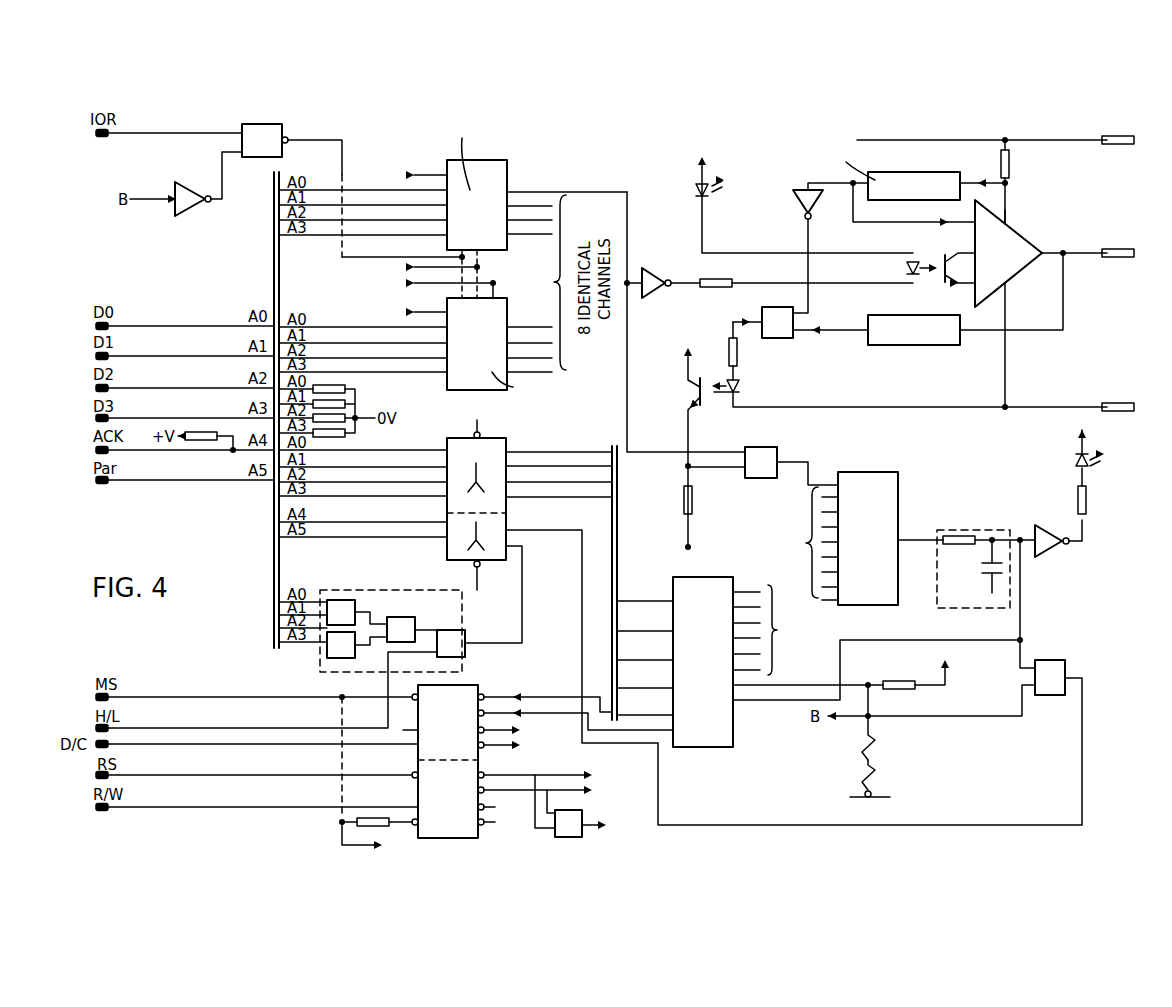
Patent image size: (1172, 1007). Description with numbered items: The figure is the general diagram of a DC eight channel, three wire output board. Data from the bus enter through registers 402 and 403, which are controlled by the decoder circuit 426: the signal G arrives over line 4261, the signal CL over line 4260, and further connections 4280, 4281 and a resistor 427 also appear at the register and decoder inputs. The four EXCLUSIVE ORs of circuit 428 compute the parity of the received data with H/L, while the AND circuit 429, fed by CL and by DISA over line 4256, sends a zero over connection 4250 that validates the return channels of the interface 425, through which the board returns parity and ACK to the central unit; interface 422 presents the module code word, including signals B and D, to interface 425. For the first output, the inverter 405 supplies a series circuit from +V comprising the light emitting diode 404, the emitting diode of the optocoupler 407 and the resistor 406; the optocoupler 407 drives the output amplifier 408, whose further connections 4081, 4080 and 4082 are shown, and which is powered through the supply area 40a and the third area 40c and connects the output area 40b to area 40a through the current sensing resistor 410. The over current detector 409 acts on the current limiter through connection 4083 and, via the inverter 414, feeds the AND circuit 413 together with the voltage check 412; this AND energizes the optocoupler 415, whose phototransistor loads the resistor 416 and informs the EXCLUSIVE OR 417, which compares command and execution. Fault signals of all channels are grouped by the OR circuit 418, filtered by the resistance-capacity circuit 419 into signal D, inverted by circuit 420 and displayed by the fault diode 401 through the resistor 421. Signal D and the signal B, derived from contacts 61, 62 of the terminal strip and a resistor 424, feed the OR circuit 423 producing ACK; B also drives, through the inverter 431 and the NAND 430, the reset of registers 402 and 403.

The NAND circuit 430 is at (280, 124).
The inverter 431 is at (194, 214).
The register 402 is at (507, 160).
The register 403 is at (508, 310).
The Df signal line 4280 is at (467, 450).
The DF signal line 4281 is at (467, 527).
The line 4261 is at (416, 559).
The line 4260 is at (499, 530).
The line 4256 is at (549, 597).
The interface 425 is at (506, 440).
The output connection 4250 is at (561, 697).
The parity calculation circuit 428 is at (408, 592).
The decoder circuit 426 is at (542, 747).
The resistor 427 is at (345, 815).
The AND circuit 429 is at (568, 837).
The interface 422 is at (712, 577).
The resistor 424 is at (918, 672).
The contact 62 is at (884, 722).
The contact 61 is at (878, 789).
The light emitting diode 404 is at (697, 188).
The inverter 405 is at (660, 260).
The resistor 406 is at (730, 280).
The optocoupler 407 is at (938, 260).
The inverter 414 is at (800, 215).
The over current detector 409 is at (954, 172).
The connection 4083 is at (972, 222).
The resistor 410 is at (1010, 165).
The output amplifier 408 is at (1008, 253).
The amplifier input 4081 is at (1008, 222).
The amplifier output 4080 is at (1045, 255).
The amplifier terminal 4082 is at (1006, 292).
The voltage check 412 is at (930, 318).
The AND circuit 413 is at (778, 338).
The optocoupler 415 is at (892, 434).
The resistor 416 is at (692, 506).
The EXCLUSIVE OR circuit 417 is at (777, 452).
The OR circuit 418 is at (898, 490).
The resistance-capacity circuit 419 is at (984, 526).
The inverter circuit 420 is at (1050, 556).
The resistor 421 is at (1078, 496).
The fault display light emitting diode 401 is at (1074, 462).
The OR circuit 423 is at (1055, 660).
The supply area 40a is at (1123, 141).
The output area 40b is at (1123, 254).
The third area 40c is at (1123, 408).